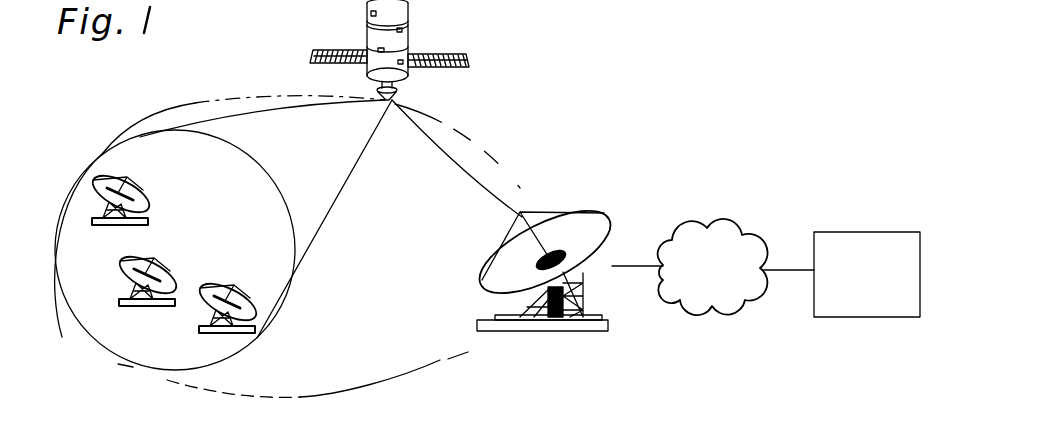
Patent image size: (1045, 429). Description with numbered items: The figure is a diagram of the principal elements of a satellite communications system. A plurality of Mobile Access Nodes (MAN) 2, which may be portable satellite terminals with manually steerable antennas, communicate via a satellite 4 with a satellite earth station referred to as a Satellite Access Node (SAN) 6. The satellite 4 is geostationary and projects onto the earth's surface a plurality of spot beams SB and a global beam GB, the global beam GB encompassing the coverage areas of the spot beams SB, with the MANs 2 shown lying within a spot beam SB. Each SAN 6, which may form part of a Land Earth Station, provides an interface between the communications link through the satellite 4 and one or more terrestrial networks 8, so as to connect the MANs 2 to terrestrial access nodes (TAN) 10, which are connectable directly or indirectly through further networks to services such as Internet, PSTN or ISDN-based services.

The Mobile Access Node (MAN) 2 is at (203, 333).
The satellite 4 is at (410, 19).
The Satellite Access Node (SAN) 6 is at (603, 212).
The terrestrial network 8 is at (705, 244).
The terrestrial access node (TAN) 10 is at (870, 240).
The spot beam SB is at (228, 357).
The global beam GB is at (421, 371).